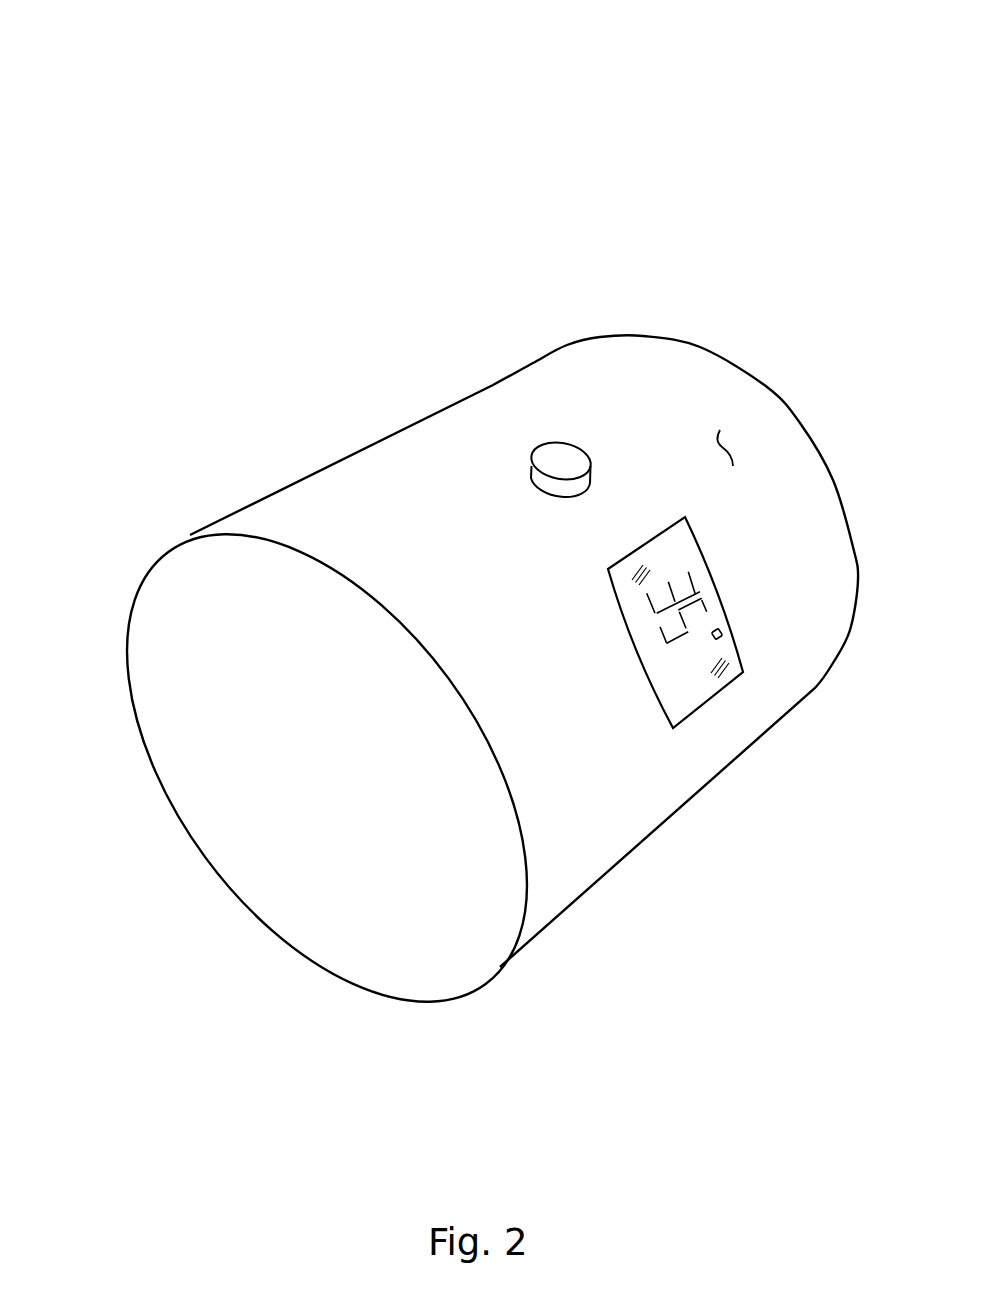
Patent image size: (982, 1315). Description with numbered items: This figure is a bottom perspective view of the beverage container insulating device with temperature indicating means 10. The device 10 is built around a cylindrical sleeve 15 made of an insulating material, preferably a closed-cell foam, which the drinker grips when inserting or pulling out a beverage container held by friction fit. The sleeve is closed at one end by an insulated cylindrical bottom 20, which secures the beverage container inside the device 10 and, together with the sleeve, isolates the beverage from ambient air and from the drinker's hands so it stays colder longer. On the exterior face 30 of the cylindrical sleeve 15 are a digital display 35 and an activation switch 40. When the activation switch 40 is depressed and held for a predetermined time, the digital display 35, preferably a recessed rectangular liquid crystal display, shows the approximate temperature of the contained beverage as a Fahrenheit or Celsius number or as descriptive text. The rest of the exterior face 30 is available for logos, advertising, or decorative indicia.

The beverage container insulating device with temperature indicating means 10 is at (113, 113).
The cylindrical sleeve 15 is at (420, 423).
The cylindrical bottom 20 is at (345, 942).
The exterior face 30 is at (725, 445).
The digital display 35 is at (687, 663).
The activation switch 40 is at (557, 463).